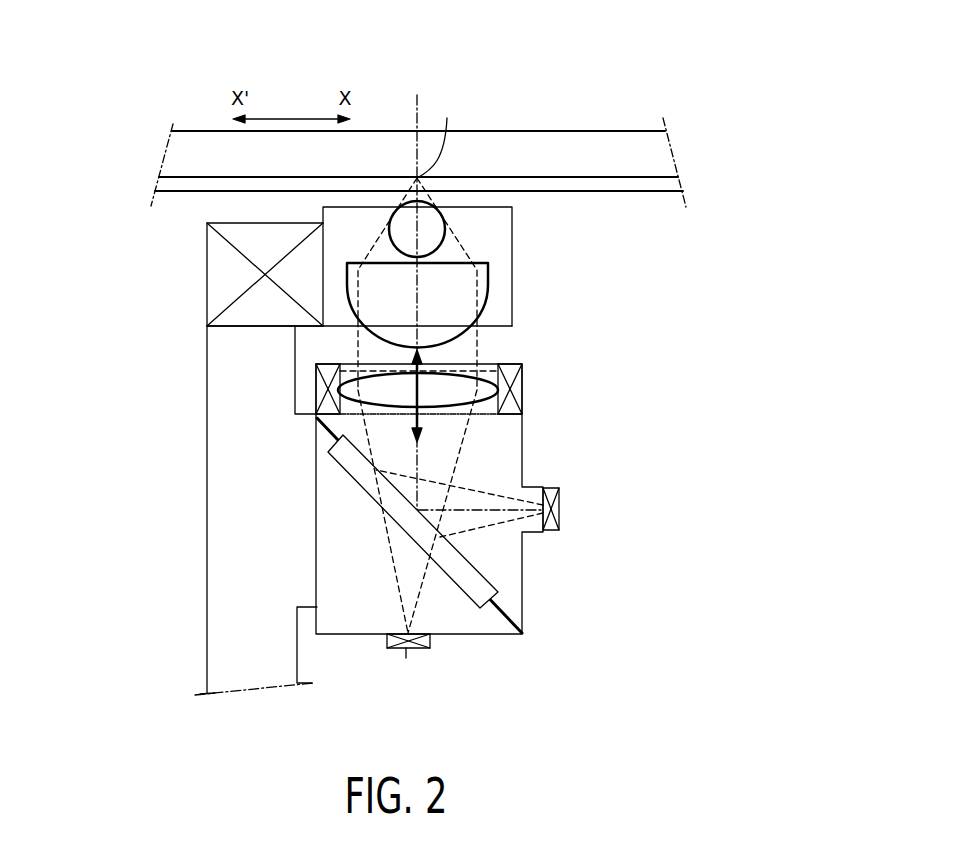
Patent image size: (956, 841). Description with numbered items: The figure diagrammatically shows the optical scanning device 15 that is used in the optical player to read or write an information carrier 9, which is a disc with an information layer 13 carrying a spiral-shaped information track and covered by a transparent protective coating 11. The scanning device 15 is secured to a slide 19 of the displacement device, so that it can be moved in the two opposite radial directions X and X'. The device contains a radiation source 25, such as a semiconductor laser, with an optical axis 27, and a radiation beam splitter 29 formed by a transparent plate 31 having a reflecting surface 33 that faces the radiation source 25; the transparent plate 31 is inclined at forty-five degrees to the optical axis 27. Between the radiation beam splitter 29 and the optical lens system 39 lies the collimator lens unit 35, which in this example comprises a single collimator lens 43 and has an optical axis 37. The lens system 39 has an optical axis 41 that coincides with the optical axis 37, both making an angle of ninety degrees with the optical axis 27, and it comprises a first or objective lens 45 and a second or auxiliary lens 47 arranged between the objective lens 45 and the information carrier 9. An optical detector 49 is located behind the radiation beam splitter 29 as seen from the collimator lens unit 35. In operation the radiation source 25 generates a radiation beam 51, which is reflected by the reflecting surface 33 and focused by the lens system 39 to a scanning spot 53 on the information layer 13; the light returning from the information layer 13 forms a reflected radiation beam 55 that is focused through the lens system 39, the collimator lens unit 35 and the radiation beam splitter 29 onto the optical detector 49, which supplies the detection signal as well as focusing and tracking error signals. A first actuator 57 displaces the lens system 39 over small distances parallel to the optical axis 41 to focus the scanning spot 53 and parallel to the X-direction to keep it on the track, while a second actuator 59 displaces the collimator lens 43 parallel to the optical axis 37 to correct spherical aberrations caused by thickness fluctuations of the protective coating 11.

The information carrier 9 is at (586, 107).
The transparent protective coating 11 is at (660, 192).
The information layer 13 is at (605, 178).
The optical scanning device 15 is at (668, 435).
The slide 19 is at (222, 628).
The radiation source 25 is at (560, 510).
The optical axis 27 is at (480, 473).
The radiation beam splitter 29 is at (323, 475).
The transparent plate 31 is at (485, 576).
The reflecting surface 33 is at (475, 553).
The collimator lens unit 35 is at (540, 393).
The optical axis 37 is at (419, 393).
The optical lens system 39 is at (585, 304).
The optical axis 41 is at (420, 254).
The collimator lens 43 is at (387, 388).
The objective lens 45 is at (512, 322).
The auxiliary lens 47 is at (445, 225).
The optical detector 49 is at (406, 660).
The radiation beam 51 is at (500, 496).
The scanning spot 53 is at (417, 238).
The reflected radiation beam 55 is at (393, 572).
The first actuator 57 is at (215, 273).
The second actuator 59 is at (510, 415).